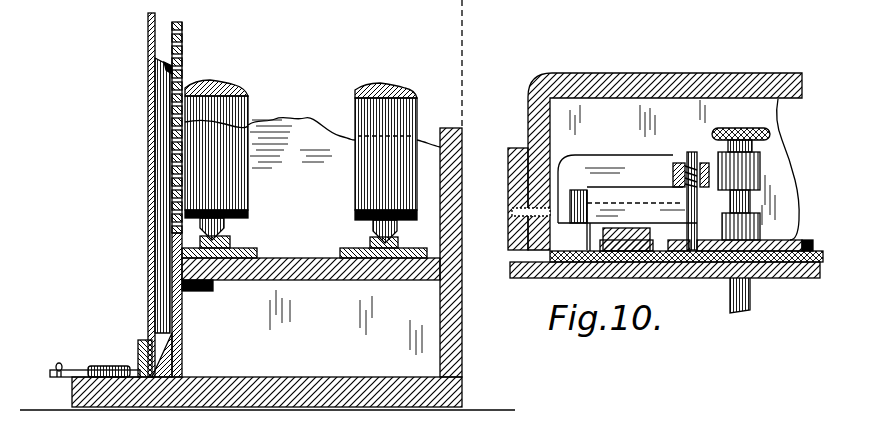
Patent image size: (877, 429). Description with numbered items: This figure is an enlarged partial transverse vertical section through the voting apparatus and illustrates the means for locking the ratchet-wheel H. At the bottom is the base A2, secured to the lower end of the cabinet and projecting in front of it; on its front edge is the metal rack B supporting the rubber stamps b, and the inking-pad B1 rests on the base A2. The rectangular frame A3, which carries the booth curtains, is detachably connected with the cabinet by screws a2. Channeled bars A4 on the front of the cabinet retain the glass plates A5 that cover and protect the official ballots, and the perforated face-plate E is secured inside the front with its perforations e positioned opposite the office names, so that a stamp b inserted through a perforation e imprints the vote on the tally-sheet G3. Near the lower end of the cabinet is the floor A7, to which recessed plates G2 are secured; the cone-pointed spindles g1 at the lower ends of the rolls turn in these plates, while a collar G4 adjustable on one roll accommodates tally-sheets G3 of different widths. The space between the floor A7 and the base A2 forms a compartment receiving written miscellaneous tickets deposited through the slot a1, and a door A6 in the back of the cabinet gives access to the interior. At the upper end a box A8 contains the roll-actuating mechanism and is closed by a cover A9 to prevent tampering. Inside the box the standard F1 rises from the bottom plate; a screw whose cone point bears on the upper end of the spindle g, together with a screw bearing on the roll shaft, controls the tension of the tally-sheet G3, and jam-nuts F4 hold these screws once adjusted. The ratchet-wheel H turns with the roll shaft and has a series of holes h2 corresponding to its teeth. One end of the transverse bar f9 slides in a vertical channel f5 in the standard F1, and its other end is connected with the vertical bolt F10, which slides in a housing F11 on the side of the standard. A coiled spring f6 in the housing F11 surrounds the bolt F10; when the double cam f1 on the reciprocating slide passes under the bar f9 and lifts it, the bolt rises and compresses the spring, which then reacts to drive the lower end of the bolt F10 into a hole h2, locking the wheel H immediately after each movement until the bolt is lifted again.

The base A2 is at (72, 392).
The rectangular frame A3 is at (520, 147).
The channeled bars A4 is at (143, 340).
The glass plates A5 is at (148, 162).
The door A6 is at (448, 129).
The floor A7 is at (311, 306).
The box A8 is at (630, 118).
The cover A9 is at (578, 74).
The slot a1 is at (180, 287).
The screws a2 is at (514, 212).
The metal rack B is at (68, 375).
The inking-pad B1 is at (113, 373).
The rubber stamps b is at (60, 360).
The perforated plate E is at (196, 199).
The perforations e is at (183, 57).
The recessed plates G2 is at (220, 258).
The tally-sheet G3 is at (344, 152).
The collar G4 is at (370, 208).
The spindle g is at (394, 216).
The cone-pointed spindles g1 is at (225, 228).
The standard F1 is at (604, 168).
The jam-nuts F4 is at (777, 135).
The vertical bolt F10 is at (688, 152).
The housing F11 is at (635, 187).
The double cam f1 is at (592, 263).
The vertical channel f5 is at (570, 240).
The coiled spring f6 is at (728, 131).
The transverse bar f9 is at (611, 213).
The ratchet-wheel H is at (781, 237).
The holes h2 is at (700, 278).